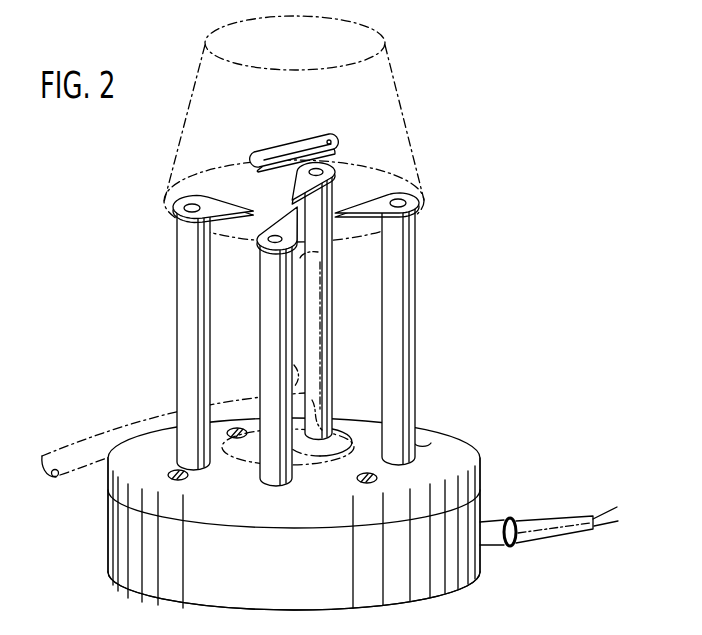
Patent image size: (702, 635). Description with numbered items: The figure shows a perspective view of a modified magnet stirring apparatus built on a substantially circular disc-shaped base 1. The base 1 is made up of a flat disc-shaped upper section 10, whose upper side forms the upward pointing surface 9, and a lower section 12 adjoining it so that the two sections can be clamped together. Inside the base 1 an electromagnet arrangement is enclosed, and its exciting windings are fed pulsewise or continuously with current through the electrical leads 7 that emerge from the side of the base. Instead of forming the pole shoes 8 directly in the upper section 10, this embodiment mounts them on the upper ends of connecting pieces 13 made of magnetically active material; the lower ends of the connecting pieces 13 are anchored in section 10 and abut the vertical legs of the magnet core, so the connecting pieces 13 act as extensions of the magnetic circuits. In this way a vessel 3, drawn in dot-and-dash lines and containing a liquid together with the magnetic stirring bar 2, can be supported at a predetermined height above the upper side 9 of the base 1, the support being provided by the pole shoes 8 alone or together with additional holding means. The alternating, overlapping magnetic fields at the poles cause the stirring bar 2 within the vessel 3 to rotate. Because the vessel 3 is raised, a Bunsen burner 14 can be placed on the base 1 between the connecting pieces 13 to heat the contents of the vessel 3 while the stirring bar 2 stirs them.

The base 1 is at (494, 488).
The stirring bar 2 is at (285, 152).
The vessel 3 is at (403, 124).
The electrical leads 7 is at (547, 532).
The pole shoes 8 is at (388, 197).
The upward pointing surface 9 is at (137, 457).
The flat disc-shaped section 10 is at (113, 478).
The lower section 12 is at (122, 540).
The connecting pieces 13 is at (190, 360).
The Bunsen burner 14 is at (317, 363).